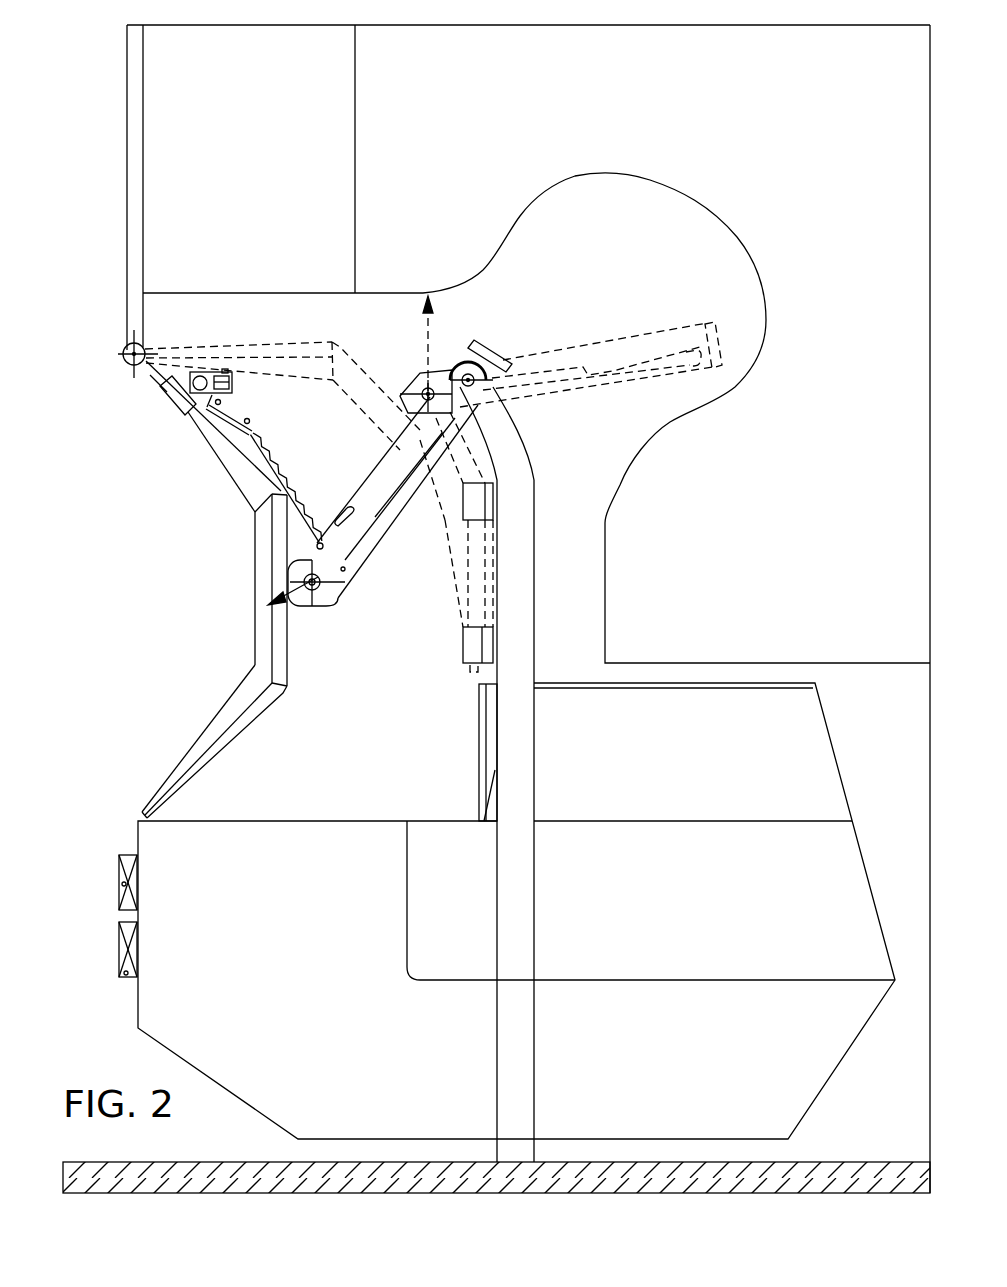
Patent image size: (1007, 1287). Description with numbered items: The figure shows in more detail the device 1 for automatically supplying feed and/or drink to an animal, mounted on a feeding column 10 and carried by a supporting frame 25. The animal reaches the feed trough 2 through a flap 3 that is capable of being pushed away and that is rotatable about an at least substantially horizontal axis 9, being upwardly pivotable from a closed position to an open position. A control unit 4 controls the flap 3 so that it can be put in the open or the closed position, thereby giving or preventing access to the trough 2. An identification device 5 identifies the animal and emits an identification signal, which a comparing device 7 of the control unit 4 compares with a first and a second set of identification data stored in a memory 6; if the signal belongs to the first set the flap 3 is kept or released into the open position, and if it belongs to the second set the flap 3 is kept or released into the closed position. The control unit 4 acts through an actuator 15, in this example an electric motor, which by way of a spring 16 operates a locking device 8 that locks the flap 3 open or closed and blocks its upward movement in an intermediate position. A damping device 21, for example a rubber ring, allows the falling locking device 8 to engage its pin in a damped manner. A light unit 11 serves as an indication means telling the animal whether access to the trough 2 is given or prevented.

The device 1 is at (220, 662).
The feed trough 2 is at (203, 850).
The flap 3 is at (210, 443).
The control unit 4 is at (168, 392).
The identification device 5 is at (126, 975).
The memory 6 is at (233, 372).
The comparing device 7 is at (210, 408).
The locking device 8 is at (343, 570).
The horizontal axis 9 is at (124, 352).
The feeding column 10 is at (133, 98).
The light unit 11 is at (122, 885).
The actuator 15 is at (187, 415).
The spring 16 is at (283, 471).
The damping device 21 is at (452, 362).
The supporting frame 25 is at (520, 753).